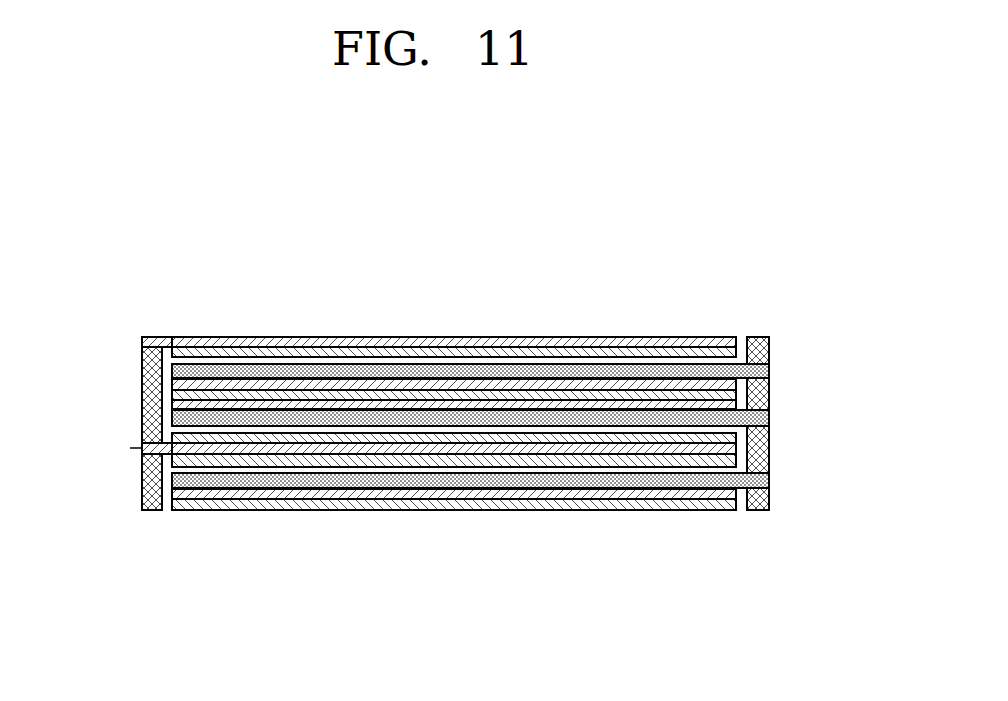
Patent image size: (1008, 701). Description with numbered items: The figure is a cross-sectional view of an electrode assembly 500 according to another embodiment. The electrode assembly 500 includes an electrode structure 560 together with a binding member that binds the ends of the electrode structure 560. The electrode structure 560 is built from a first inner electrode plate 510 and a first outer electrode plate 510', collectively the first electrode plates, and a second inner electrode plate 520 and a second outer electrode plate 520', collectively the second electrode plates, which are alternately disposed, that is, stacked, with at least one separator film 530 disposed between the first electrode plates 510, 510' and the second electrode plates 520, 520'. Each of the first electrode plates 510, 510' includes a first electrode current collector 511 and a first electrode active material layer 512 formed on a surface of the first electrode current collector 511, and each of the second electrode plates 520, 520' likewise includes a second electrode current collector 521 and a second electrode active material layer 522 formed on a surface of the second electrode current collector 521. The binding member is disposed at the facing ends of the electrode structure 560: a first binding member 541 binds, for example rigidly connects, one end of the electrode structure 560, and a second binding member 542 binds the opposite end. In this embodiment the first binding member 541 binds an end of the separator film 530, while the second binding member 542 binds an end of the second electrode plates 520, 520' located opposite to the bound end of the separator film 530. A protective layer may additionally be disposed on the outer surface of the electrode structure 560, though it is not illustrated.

The electrode assembly 500 is at (778, 284).
The first inner electrode plate 510 is at (454, 320).
The first outer electrode plate 510' is at (454, 545).
The first electrode current collector 511 is at (340, 397).
The first electrode active material layer 512 is at (293, 385).
The second inner electrode plate 520 is at (454, 518).
The second outer electrode plate 520' is at (454, 294).
The second electrode current collector 521 is at (520, 342).
The second electrode active material layer 522 is at (578, 350).
The separator film 530 is at (693, 370).
The first binding member 541 is at (762, 395).
The second binding member 542 is at (150, 390).
The electrode structure 560 is at (455, 439).